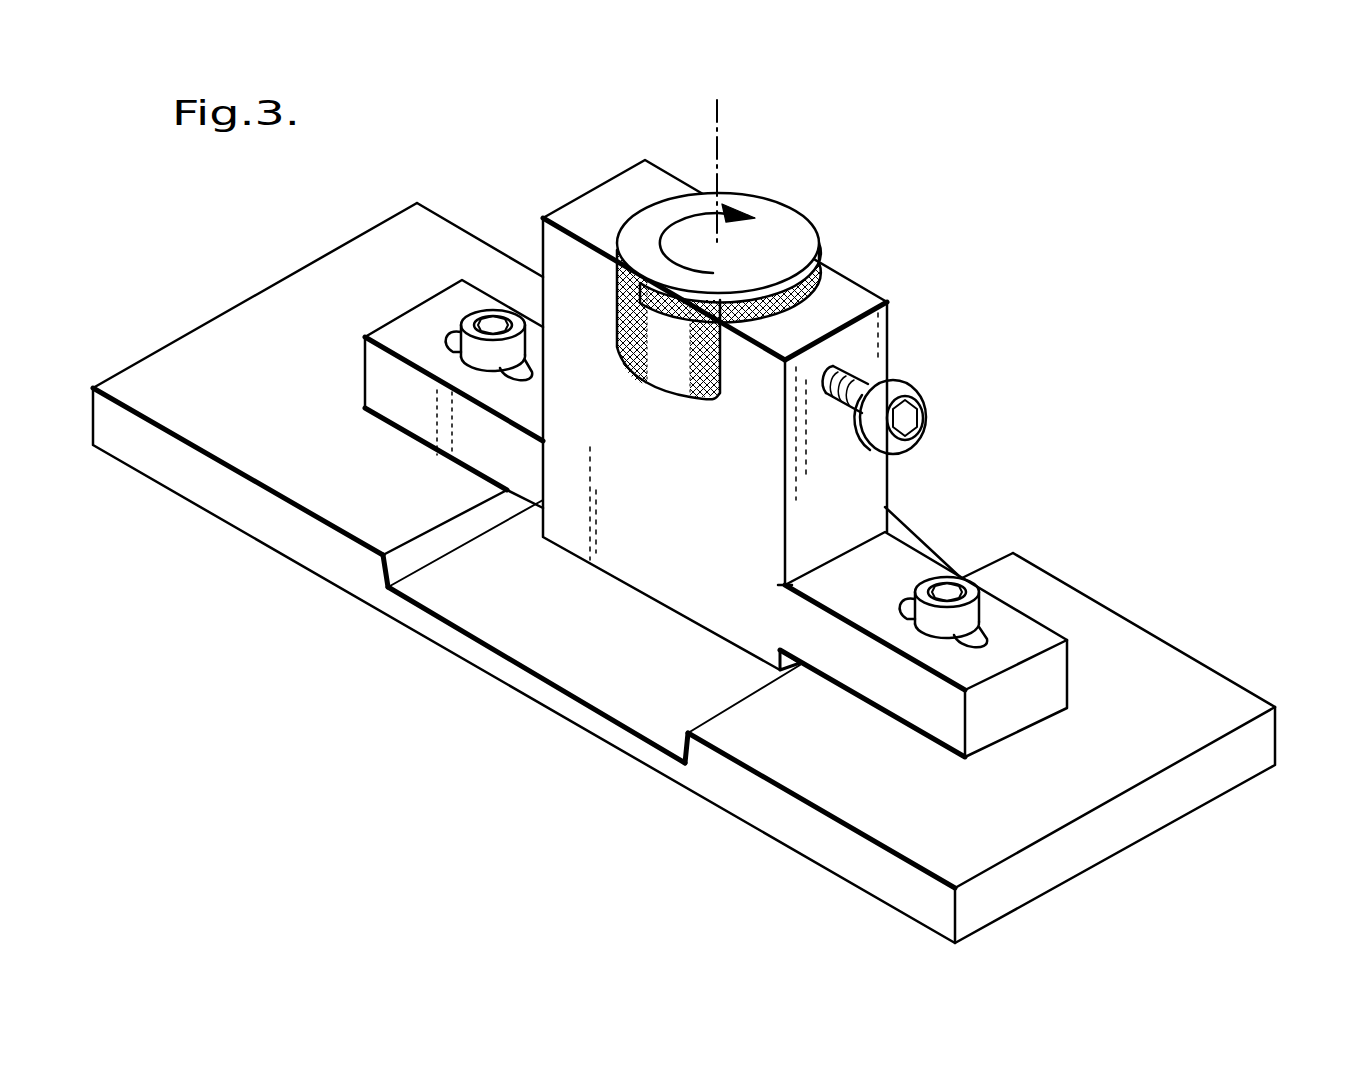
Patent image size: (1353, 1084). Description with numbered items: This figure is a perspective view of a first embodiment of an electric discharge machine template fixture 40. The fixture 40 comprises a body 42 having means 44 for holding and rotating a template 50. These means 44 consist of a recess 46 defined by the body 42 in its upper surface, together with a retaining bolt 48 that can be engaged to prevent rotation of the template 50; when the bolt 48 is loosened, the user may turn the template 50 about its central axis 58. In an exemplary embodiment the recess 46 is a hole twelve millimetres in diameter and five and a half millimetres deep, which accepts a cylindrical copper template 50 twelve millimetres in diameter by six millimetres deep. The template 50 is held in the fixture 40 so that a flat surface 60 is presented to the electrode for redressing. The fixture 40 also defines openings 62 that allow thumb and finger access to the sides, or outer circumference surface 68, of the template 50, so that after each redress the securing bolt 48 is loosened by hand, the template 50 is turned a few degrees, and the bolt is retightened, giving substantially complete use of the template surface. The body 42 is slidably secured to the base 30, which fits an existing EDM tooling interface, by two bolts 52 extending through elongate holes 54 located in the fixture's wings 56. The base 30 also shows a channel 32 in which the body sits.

The base 30 is at (1125, 647).
The channel 32 is at (635, 695).
The electric discharge machine template fixture 40 is at (682, 413).
The body 42 is at (753, 527).
The means for holding and rotating a template 44 is at (950, 227).
The recess 46 is at (568, 263).
The retaining bolt 48 is at (920, 390).
The template 50 is at (754, 211).
The bolts 52 is at (960, 590).
The elongate holes 54 is at (987, 637).
The wings 56 is at (382, 385).
The central axis 58 is at (712, 190).
The flat surface 60 is at (730, 282).
The openings 62 is at (543, 303).
The outer circumference surface 68 is at (667, 357).